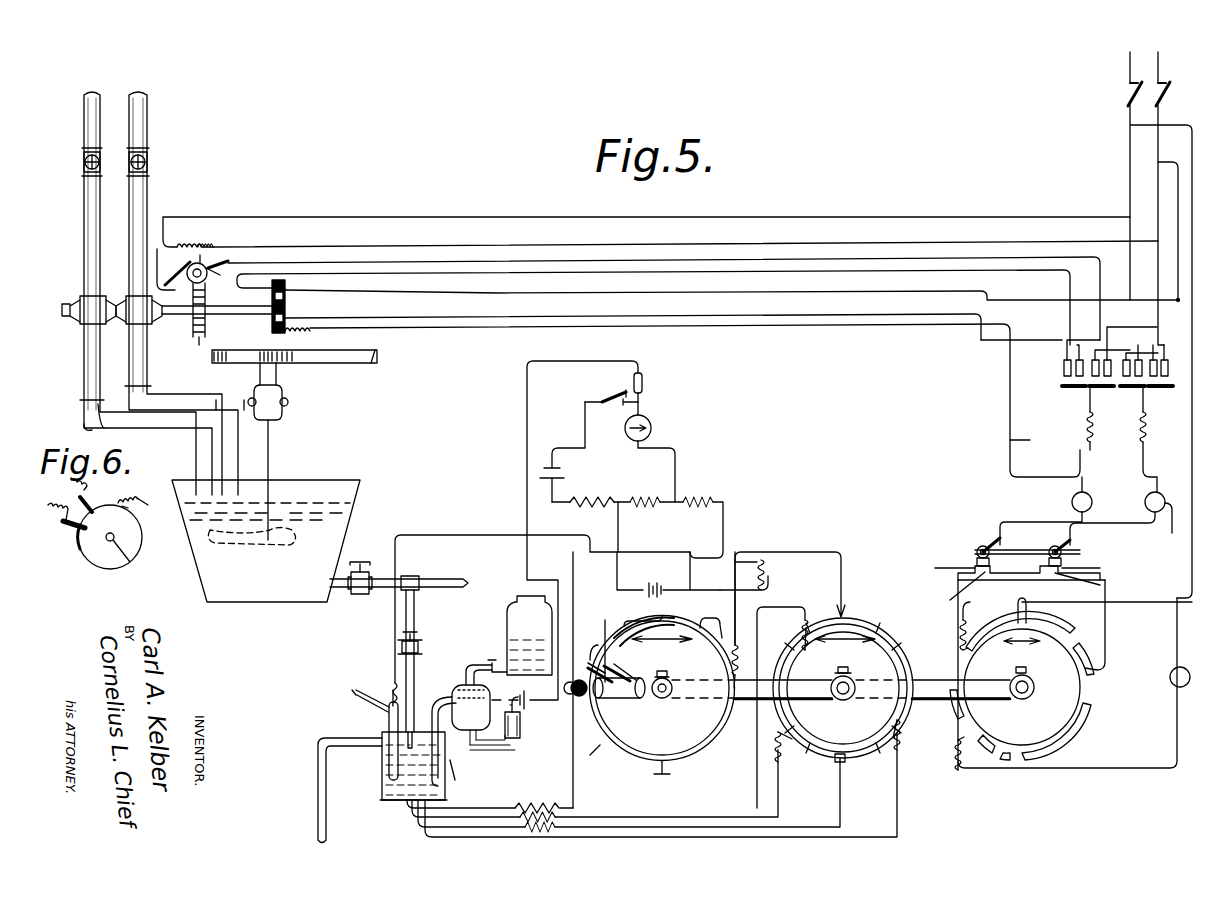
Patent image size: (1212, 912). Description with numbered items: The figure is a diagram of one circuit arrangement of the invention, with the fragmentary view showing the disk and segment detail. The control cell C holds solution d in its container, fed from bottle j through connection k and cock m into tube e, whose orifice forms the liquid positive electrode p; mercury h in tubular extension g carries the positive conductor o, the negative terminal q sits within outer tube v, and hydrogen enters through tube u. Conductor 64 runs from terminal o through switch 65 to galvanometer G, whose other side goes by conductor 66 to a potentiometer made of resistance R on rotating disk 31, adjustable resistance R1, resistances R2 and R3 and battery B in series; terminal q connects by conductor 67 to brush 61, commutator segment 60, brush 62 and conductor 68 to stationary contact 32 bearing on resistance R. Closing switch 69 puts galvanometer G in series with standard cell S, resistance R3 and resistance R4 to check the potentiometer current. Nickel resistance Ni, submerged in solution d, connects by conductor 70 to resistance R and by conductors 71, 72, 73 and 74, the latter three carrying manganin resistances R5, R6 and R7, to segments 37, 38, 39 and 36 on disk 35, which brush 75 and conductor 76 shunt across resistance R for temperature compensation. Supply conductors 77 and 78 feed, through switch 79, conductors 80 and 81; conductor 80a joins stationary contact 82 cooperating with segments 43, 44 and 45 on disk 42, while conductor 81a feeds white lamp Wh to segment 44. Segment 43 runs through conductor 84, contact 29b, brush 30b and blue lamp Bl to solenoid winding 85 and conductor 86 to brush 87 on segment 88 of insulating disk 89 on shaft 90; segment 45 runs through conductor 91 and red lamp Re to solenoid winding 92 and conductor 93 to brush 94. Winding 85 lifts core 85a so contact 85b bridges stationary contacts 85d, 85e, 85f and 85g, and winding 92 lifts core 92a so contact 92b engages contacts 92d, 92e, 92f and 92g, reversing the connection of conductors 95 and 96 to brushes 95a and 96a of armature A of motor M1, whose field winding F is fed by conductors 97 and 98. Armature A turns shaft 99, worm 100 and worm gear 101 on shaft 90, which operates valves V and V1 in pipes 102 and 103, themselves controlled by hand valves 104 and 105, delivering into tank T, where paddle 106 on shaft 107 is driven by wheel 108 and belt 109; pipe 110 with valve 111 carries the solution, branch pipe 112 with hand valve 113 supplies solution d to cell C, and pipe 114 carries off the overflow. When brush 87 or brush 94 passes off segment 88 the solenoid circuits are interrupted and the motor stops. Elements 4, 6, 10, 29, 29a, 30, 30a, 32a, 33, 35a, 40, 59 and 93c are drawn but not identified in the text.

In FIG. 5, the shaft knob 4 is at (580, 698).
In FIG. 5, the relay 6 is at (1015, 572).
In FIG. 5, the shaft 10 is at (742, 698).
In FIG. 5, the contact 29 is at (1029, 595).
In FIG. 5, the contact 29a is at (1105, 568).
In FIG. 5, the contact 29b is at (930, 568).
In FIG. 5, the armature bar 30 is at (975, 565).
In FIG. 5, the armature 30a is at (1068, 548).
In FIG. 5, the armature 30b is at (978, 547).
In FIG. 5, the dial 31 is at (690, 740).
In FIG. 5, the contact segment 32 is at (640, 622).
In FIG. 5, the dial ring 32a is at (606, 760).
In FIG. 5, the knob 33 is at (668, 676).
In FIG. 5, the dial 35 is at (905, 722).
In FIG. 5, the hub 35a is at (850, 672).
In FIG. 5, the ring 36 is at (893, 640).
In FIG. 5, the scale 37 is at (905, 652).
In FIG. 5, the contact 38 is at (860, 752).
In FIG. 5, the contact coil 39 is at (795, 645).
In FIG. 5, the hub 40 is at (1028, 670).
In FIG. 5, the contact segment 42 is at (1085, 695).
In FIG. 5, the dial 43 is at (1075, 710).
In FIG. 5, the contact segment 44 is at (990, 748).
In FIG. 5, the contact segment 45 is at (1000, 650).
In FIG. 5, the contact arm 59 is at (590, 670).
In FIG. 5, the cylinder 60 is at (616, 700).
In FIG. 5, the contact 61 is at (610, 668).
In FIG. 5, the contact 62 is at (626, 674).
In FIG. 5, the conductor 64 is at (620, 355).
In FIG. 5, the fuse 65 is at (644, 381).
In FIG. 5, the conductor 66 is at (676, 472).
In FIG. 5, the conductor 67 is at (393, 625).
In FIG. 5, the conductor 68 is at (605, 645).
In FIG. 5, the switch 69 is at (600, 395).
In FIG. 5, the conductor 70 is at (482, 808).
In FIG. 5, the conductor 71 is at (898, 785).
In FIG. 5, the conductor 72 is at (840, 785).
In FIG. 5, the conductor 73 is at (778, 770).
In FIG. 5, the conductor 74 is at (805, 606).
In FIG. 5, the conductor 75 is at (845, 612).
In FIG. 5, the conductor 76 is at (812, 552).
In FIG. 5, the supply lead 77 is at (1126, 62).
In FIG. 5, the supply lead 78 is at (1158, 62).
In FIG. 5, the switch 79 is at (1126, 98).
In FIG. 5, the conductor 80 is at (1128, 172).
In FIG. 5, the conductor 80a is at (1170, 127).
In FIG. 5, the conductor 81 is at (1157, 193).
In FIG. 5, the conductor 81a is at (432, 329).
In FIG. 6, the conductor 81a is at (160, 511).
In FIG. 5, the contact 82 is at (1032, 608).
In FIG. 5, the conductor 84 is at (1170, 532).
In FIG. 5, the relay coil 85 is at (1143, 418).
In FIG. 5, the relay bar 85a is at (1160, 391).
In FIG. 5, the relay contact 85b is at (1165, 360).
In FIG. 5, the relay contact 85d is at (1154, 360).
In FIG. 5, the relay contact 85e is at (1137, 360).
In FIG. 5, the relay contact 85f is at (1110, 330).
In FIG. 5, the relay contact 85g is at (1092, 360).
In FIG. 5, the conductor 86 is at (350, 296).
In FIG. 6, the conductor 86 is at (65, 500).
In FIG. 5, the coil 87 is at (272, 326).
In FIG. 6, the coil 87 is at (75, 530).
In FIG. 5, the block 88 is at (270, 297).
In FIG. 6, the block 88 is at (82, 545).
In FIG. 5, the contact 89 is at (285, 295).
In FIG. 6, the contact 89 is at (138, 542).
In FIG. 5, the shaft 90 is at (120, 322).
In FIG. 6, the shaft 90 is at (130, 560).
In FIG. 5, the conductor 91 is at (1080, 463).
In FIG. 5, the relay coil 92 is at (1088, 428).
In FIG. 5, the relay bar 92a is at (1088, 388).
In FIG. 5, the relay bar 92b is at (1125, 396).
In FIG. 5, the relay contact 92d is at (1068, 340).
In FIG. 5, the relay contact 92e is at (1081, 360).
In FIG. 5, the relay contact 92f is at (1065, 368).
In FIG. 5, the relay bar 92g is at (1060, 386).
In FIG. 5, the conductor 93 is at (412, 318).
In FIG. 6, the conductor 93 is at (88, 505).
In FIG. 5, the conductor 93c is at (1060, 392).
In FIG. 5, the contact 94 is at (285, 318).
In FIG. 6, the contact 94 is at (130, 495).
In FIG. 5, the contact arm 95 is at (166, 275).
In FIG. 5, the coil 95a is at (182, 244).
In FIG. 5, the conductor 96 is at (350, 273).
In FIG. 5, the conductor 96a is at (300, 249).
In FIG. 5, the conductor 97 is at (445, 214).
In FIG. 5, the conductor 98 is at (500, 246).
In FIG. 5, the arm 99 is at (218, 262).
In FIG. 5, the rod 100 is at (194, 330).
In FIG. 5, the rod end 101 is at (199, 345).
In FIG. 5, the pipe 102 is at (84, 120).
In FIG. 5, the pipe 103 is at (147, 115).
In FIG. 5, the valve 104 is at (84, 162).
In FIG. 5, the valve 105 is at (148, 160).
In FIG. 5, the liquid 106 is at (295, 528).
In FIG. 5, the stirrer 107 is at (270, 443).
In FIG. 5, the bar 108 is at (312, 363).
In FIG. 5, the bar end 109 is at (372, 363).
In FIG. 5, the pipe 110 is at (455, 574).
In FIG. 5, the valve 111 is at (358, 595).
In FIG. 5, the pipe 112 is at (415, 602).
In FIG. 5, the valve 113 is at (418, 642).
In FIG. 5, the drain pipe 114 is at (318, 790).
In FIG. 5, the contact A is at (212, 262).
In FIG. 5, the arm F is at (196, 250).
In FIG. 5, the magnet M1 is at (210, 268).
In FIG. 5, the valve V is at (70, 296).
In FIG. 5, the valve V1 is at (124, 298).
In FIG. 5, the tank T is at (352, 504).
In FIG. 5, the galvanometer G is at (622, 445).
In FIG. 5, the battery S is at (562, 466).
In FIG. 5, the battery B is at (646, 585).
In FIG. 5, the contact R is at (699, 674).
In FIG. 5, the resistor R1 is at (770, 576).
In FIG. 5, the resistor R2 is at (705, 500).
In FIG. 5, the resistor R3 is at (642, 504).
In FIG. 5, the resistor R4 is at (580, 501).
In FIG. 5, the resistor R5 is at (548, 830).
In FIG. 5, the resistor R6 is at (575, 817).
In FIG. 5, the resistor R7 is at (535, 808).
In FIG. 5, the red lamp Re is at (1072, 502).
In FIG. 5, the blue lamp Bl is at (1145, 502).
In FIG. 5, the white lamp Wh is at (1170, 677).
In FIG. 5, the cell C is at (380, 752).
In FIG. 5, the nickel electrode Ni is at (403, 802).
In FIG. 5, the bottle j is at (510, 612).
In FIG. 5, the tap m is at (490, 660).
In FIG. 5, the tube k is at (466, 672).
In FIG. 5, the wire q is at (392, 690).
In FIG. 5, the probe u is at (355, 695).
In FIG. 5, the tube v is at (389, 716).
In FIG. 5, the electrode d is at (410, 732).
In FIG. 5, the tube e is at (435, 700).
In FIG. 5, the cell o is at (510, 698).
In FIG. 5, the vessel h is at (480, 748).
In FIG. 5, the cup g is at (510, 740).
In FIG. 5, the electrode p is at (457, 775).